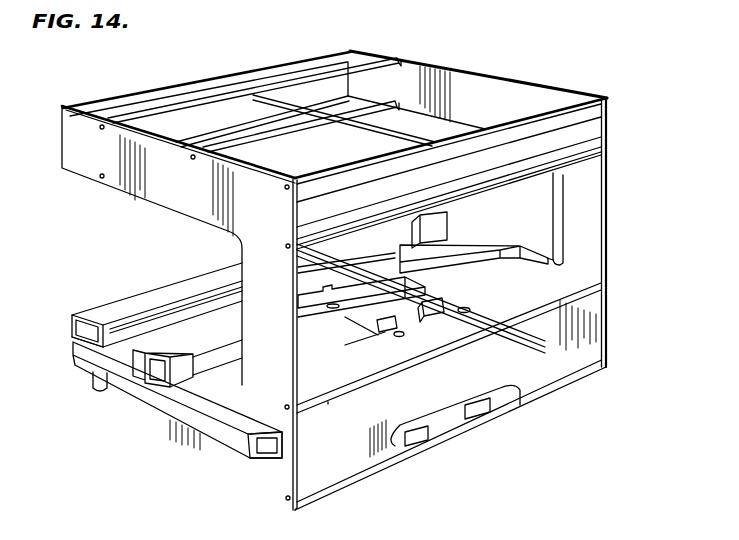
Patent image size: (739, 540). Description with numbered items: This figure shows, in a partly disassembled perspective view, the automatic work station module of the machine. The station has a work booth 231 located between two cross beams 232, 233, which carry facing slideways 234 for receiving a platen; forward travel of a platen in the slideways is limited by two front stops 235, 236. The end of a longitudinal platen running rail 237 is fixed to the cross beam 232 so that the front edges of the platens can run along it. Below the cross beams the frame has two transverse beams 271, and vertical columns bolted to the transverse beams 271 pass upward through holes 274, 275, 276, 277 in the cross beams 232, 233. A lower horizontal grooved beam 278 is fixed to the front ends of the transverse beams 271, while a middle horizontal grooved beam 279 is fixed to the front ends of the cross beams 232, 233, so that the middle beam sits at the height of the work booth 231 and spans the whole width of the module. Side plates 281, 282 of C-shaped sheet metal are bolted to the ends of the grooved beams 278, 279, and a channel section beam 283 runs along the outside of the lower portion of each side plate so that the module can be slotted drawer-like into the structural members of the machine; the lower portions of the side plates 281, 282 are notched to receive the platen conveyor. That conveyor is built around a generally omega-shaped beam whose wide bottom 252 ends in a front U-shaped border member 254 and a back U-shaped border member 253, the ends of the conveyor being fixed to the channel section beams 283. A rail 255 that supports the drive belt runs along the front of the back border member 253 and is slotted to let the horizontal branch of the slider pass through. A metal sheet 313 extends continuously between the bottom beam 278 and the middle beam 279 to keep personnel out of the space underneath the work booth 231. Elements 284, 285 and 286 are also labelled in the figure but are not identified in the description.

The hole 276 is at (293, 310).
The top frame rail 285 is at (583, 118).
The front cross rail 286 is at (588, 147).
The side plate 281 is at (597, 213).
The metal sheet 313 is at (583, 330).
The lower horizontal grooved beam 278 is at (388, 457).
The middle horizontal grooved beam 279 is at (328, 402).
The longitudinal platen running rail 237 is at (488, 248).
The hole 274 is at (447, 248).
The work booth 231 is at (372, 298).
The cross beam 232 is at (503, 323).
The front stop 235 is at (447, 296).
The hole 275 is at (466, 315).
The slideway 234 is at (401, 339).
The hole 277 is at (390, 334).
The cross beam 233 is at (347, 328).
The front stop 236 is at (363, 355).
The transverse beam 271 is at (437, 437).
The back longitudinal U-shaped border member 253 is at (123, 289).
The rail 255 is at (75, 340).
The wide bottom 252 is at (100, 396).
The front longitudinal U-shaped border member 254 is at (175, 412).
The channel section beam 283 is at (268, 443).
The slide block 284 is at (182, 373).
The side plate 282 is at (284, 336).